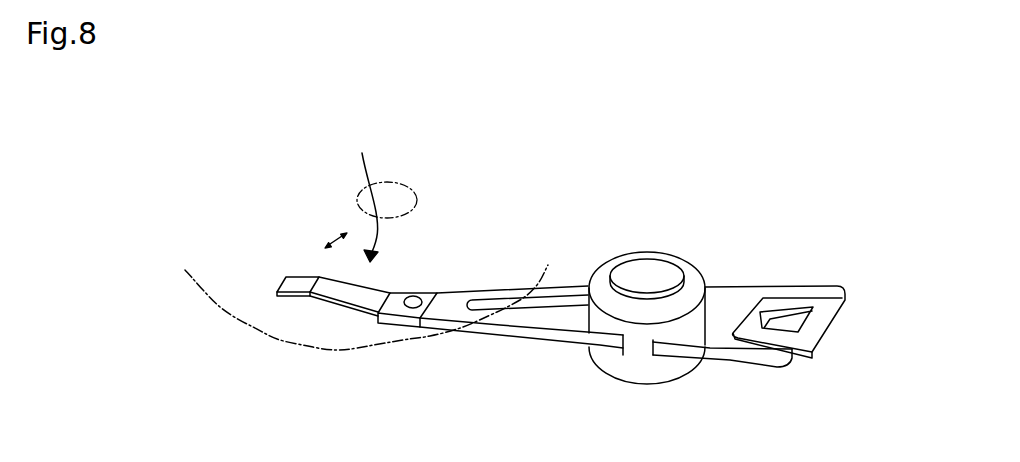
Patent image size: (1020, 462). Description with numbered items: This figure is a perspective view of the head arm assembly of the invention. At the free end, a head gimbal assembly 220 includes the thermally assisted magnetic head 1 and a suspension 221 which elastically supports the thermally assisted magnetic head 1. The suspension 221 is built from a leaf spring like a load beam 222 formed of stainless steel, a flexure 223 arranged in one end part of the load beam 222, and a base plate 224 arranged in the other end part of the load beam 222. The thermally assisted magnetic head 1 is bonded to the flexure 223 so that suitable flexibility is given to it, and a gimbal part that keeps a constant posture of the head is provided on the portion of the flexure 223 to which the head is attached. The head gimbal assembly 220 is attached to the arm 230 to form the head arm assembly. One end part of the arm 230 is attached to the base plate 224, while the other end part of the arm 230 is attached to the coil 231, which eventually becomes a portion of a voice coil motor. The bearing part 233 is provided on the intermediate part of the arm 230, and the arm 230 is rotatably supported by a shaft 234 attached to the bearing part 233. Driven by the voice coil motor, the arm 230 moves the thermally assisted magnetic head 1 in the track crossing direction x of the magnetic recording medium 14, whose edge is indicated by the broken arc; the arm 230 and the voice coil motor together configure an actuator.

The thermally assisted magnetic head 1 is at (302, 281).
The magnetic recording medium 14 is at (311, 350).
The head gimbal assembly 220 is at (379, 333).
The suspension 221 is at (371, 196).
The load beam 222 is at (385, 295).
The flexure 223 is at (278, 288).
The base plate 224 is at (437, 292).
The arm 230 is at (497, 334).
The coil 231 is at (832, 337).
The bearing part 233 is at (603, 270).
The shaft 234 is at (657, 270).